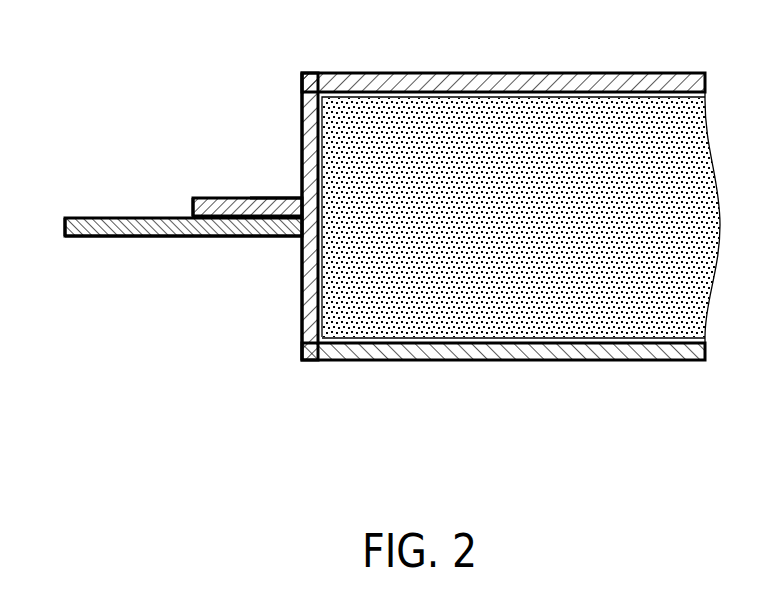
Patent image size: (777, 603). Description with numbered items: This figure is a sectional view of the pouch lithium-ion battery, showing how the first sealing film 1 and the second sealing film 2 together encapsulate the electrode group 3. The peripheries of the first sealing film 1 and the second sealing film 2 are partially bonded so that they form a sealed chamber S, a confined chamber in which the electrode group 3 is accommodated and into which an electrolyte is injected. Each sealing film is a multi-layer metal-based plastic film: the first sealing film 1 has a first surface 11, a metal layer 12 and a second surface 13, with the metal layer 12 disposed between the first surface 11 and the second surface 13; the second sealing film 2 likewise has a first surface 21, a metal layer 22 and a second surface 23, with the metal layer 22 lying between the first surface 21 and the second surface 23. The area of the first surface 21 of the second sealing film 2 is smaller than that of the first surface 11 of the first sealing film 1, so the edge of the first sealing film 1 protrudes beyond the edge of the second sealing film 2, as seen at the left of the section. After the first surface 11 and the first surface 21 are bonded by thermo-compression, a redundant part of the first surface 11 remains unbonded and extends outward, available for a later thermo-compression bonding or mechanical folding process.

The first sealing film 1 is at (298, 352).
The second sealing film 2 is at (237, 195).
The electrode group 3 is at (484, 112).
The sealed chamber S is at (585, 115).
The first surface 11 is at (93, 218).
The metal layer 12 is at (65, 228).
The second surface 13 is at (97, 238).
The first surface 21 is at (192, 214).
The metal layer 22 is at (238, 207).
The second surface 23 is at (267, 205).